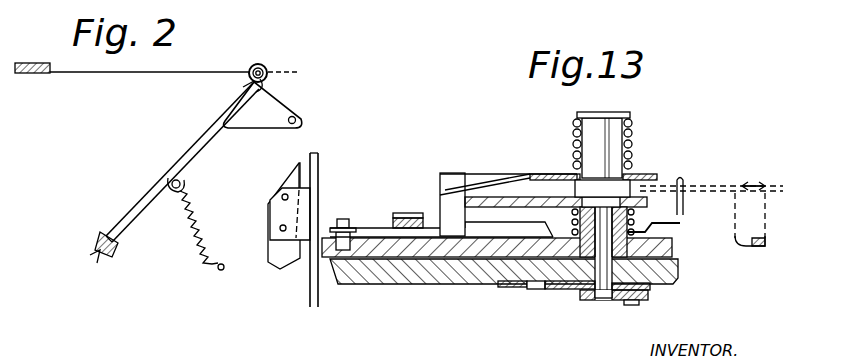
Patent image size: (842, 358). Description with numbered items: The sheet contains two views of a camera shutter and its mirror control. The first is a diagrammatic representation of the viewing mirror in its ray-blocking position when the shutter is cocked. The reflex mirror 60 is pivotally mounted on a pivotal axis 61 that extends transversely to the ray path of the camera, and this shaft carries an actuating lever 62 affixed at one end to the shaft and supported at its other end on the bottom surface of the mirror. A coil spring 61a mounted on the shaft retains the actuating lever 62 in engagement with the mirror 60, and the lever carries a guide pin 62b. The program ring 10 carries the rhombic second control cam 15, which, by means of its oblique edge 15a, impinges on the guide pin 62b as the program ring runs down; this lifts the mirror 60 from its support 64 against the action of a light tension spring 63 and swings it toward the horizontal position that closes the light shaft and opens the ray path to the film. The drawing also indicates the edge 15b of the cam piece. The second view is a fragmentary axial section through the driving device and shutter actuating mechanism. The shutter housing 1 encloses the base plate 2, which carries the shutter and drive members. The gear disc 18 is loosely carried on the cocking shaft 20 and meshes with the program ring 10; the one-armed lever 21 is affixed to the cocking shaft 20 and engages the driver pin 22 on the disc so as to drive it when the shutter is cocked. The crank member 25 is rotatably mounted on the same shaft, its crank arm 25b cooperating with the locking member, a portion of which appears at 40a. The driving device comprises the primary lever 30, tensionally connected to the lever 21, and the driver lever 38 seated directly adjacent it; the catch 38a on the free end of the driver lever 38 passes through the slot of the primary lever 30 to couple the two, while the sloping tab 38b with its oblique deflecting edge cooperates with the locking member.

In FIG. 13, the shutter housing 1 is at (674, 274).
In FIG. 13, the base plate 2 is at (663, 250).
In FIG. 2, the program ring 10 is at (309, 284).
In FIG. 13, the program ring 10 is at (513, 286).
In FIG. 2, the second control cam 15 is at (268, 253).
In FIG. 2, the oblique edge 15a is at (288, 173).
In FIG. 2, the bracket arm 15b is at (270, 212).
In FIG. 13, the gear disc 18 is at (551, 285).
In FIG. 13, the cocking shaft 20 is at (585, 290).
In FIG. 13, the one-armed lever 21 is at (623, 301).
In FIG. 13, the driver pin 22 is at (633, 305).
In FIG. 13, the crank member 25 is at (500, 226).
In FIG. 13, the crank arm 25b is at (680, 224).
In FIG. 13, the primary lever 30 is at (502, 200).
In FIG. 13, the driver lever 38 is at (530, 175).
In FIG. 13, the catch 38a is at (448, 218).
In FIG. 13, the sloping tab 38b is at (440, 178).
In FIG. 13, the actuating rod 40a is at (725, 192).
In FIG. 2, the reflex mirror 60 is at (196, 139).
In FIG. 2, the pivotal axis 61 is at (265, 70).
In FIG. 2, the coil spring 61a is at (243, 86).
In FIG. 2, the actuating lever 62 is at (275, 97).
In FIG. 2, the guide pin 62b is at (299, 118).
In FIG. 2, the tension spring 63 is at (197, 237).
In FIG. 2, the support 64 is at (98, 246).